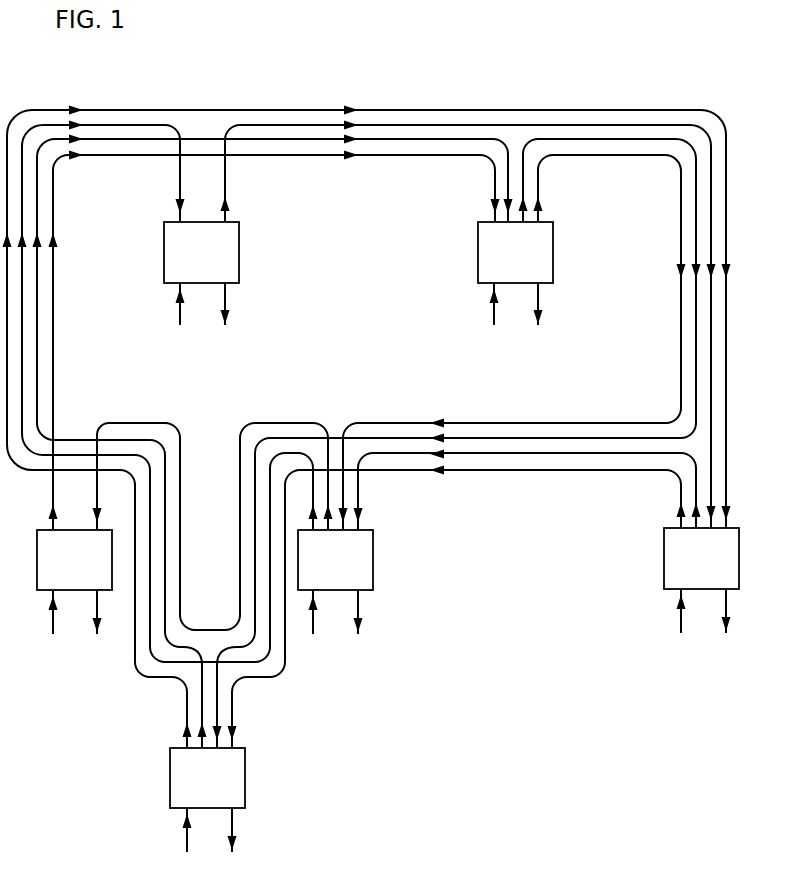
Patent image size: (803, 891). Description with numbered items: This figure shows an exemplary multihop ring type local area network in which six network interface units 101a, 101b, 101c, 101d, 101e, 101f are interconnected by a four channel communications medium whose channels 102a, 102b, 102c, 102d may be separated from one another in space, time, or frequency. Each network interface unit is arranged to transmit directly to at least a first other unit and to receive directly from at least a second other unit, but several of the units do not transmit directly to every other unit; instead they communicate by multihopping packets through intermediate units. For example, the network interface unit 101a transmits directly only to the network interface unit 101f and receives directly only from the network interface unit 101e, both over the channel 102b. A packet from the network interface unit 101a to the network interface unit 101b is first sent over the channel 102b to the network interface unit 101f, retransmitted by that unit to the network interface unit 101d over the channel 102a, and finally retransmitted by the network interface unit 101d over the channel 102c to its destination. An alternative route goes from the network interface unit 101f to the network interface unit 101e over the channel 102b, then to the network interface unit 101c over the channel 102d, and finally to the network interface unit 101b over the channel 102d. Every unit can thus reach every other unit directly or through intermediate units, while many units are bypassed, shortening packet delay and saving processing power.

The network interface unit 101a is at (240, 246).
The network interface unit 101b is at (478, 265).
The network interface unit 101c is at (38, 592).
The network interface unit 101d is at (246, 768).
The network interface unit 101e is at (374, 580).
The network interface unit 101f is at (664, 585).
The channel 102a is at (243, 109).
The channel 102b is at (317, 123).
The channel 102c is at (367, 137).
The channel 102d is at (417, 152).